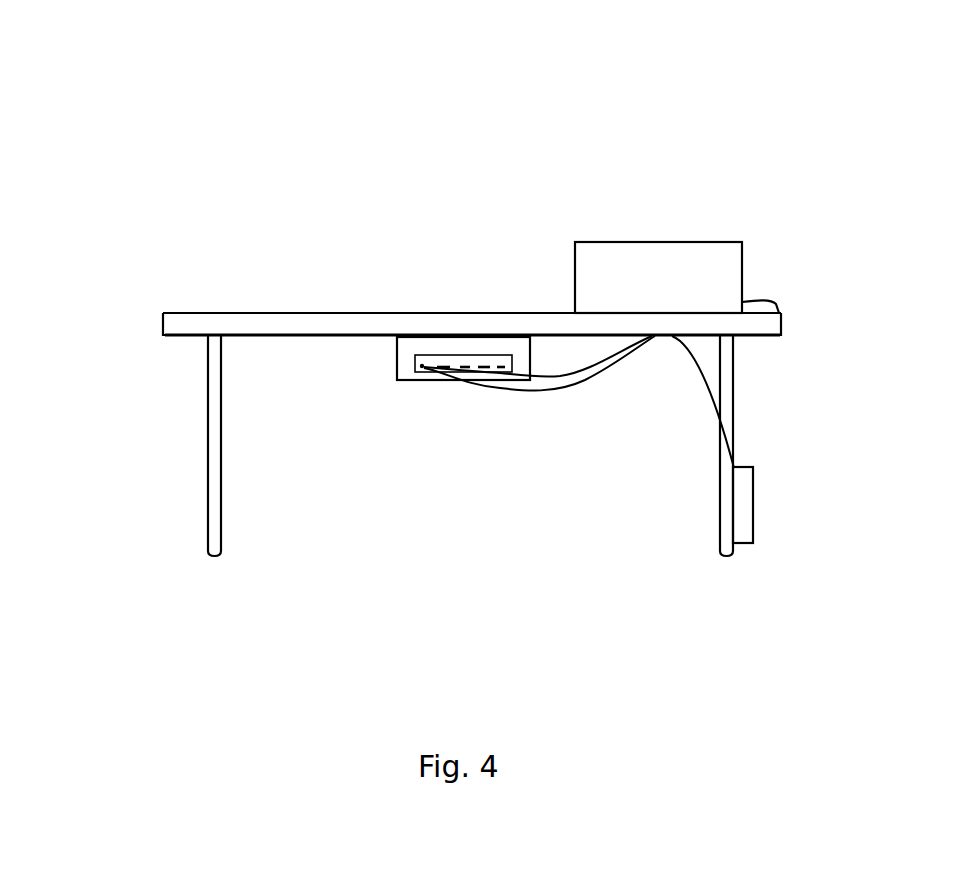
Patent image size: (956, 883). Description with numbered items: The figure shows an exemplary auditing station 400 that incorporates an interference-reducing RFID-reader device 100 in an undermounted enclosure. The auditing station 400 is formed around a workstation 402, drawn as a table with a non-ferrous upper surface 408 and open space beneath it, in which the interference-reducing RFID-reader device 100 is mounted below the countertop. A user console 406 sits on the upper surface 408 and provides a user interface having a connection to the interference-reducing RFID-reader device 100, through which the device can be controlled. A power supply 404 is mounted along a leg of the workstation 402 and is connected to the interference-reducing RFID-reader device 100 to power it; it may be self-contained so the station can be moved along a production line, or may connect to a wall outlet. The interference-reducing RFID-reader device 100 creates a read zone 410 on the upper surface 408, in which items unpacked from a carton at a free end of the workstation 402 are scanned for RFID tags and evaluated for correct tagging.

The auditing station 400 is at (438, 314).
The workstation 402 is at (182, 324).
The power supply 404 is at (741, 493).
The user console 406 is at (640, 253).
The upper surface 408 is at (285, 313).
The read zone 410 is at (447, 313).
The interference-reducing RFID-reader device 100 is at (405, 380).